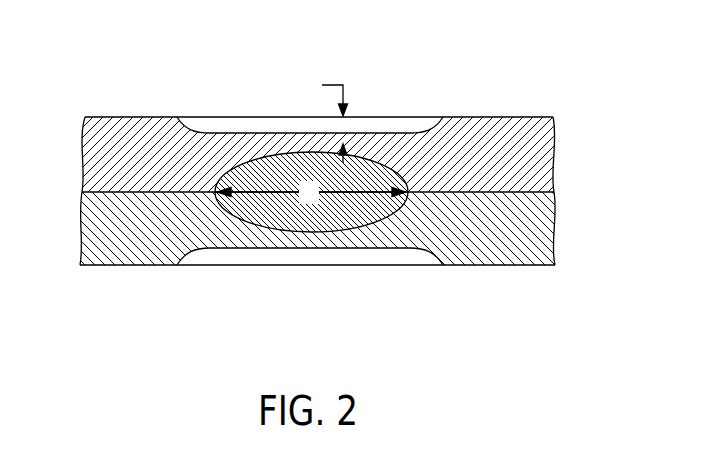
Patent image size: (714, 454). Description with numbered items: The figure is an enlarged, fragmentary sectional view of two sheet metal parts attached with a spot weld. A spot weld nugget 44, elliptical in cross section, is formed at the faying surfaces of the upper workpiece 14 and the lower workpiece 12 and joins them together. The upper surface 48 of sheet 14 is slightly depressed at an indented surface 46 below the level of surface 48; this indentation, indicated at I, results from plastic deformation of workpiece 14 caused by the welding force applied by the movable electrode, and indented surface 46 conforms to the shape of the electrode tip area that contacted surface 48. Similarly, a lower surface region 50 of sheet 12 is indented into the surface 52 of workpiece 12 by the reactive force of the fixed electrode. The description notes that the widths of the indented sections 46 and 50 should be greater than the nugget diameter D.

The workpiece 12 is at (113, 253).
The workpiece 14 is at (137, 130).
The spot weld nugget 44 is at (384, 220).
The indented surface 46 is at (270, 123).
The upper surface 48 is at (497, 117).
The lower surface region 50 is at (311, 255).
The surface 52 is at (212, 265).